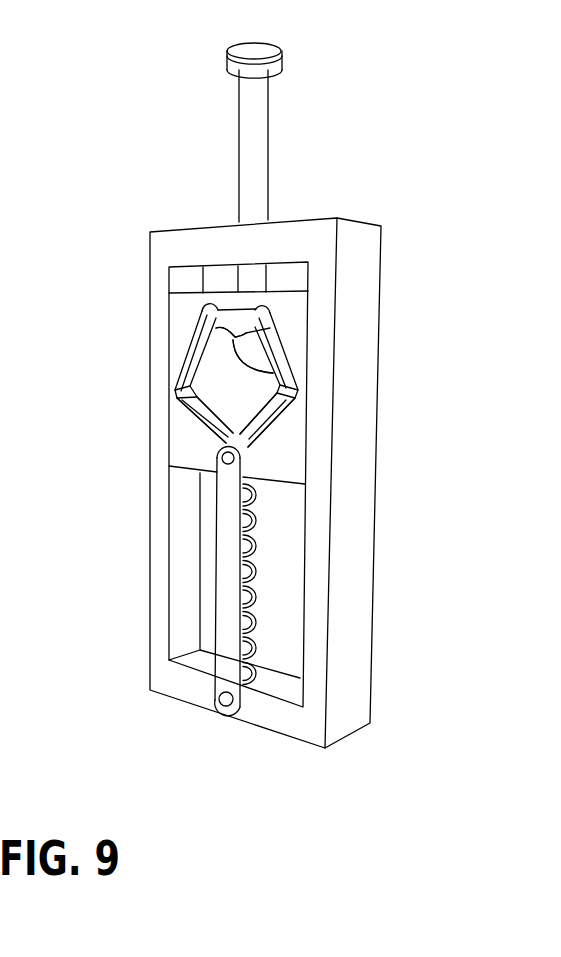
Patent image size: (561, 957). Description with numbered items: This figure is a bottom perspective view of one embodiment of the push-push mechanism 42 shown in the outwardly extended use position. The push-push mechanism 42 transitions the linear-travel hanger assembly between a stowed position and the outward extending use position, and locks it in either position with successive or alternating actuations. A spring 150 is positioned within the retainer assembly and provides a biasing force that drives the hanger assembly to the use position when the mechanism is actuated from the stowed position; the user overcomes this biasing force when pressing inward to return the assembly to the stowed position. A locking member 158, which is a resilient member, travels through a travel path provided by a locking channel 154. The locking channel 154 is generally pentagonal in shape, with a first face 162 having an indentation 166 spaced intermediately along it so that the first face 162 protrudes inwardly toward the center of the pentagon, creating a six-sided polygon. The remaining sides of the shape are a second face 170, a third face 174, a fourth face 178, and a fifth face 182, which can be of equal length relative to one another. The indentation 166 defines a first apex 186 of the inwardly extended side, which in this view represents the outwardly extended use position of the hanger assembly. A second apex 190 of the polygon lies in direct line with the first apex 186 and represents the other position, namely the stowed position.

The push-push mechanism 42 is at (106, 184).
The locking channel 154 is at (203, 322).
The fifth face 182 is at (190, 353).
The fourth face 178 is at (213, 430).
The second face 170 is at (283, 347).
The first face 162 is at (237, 305).
The indentation 166 is at (297, 378).
The first apex 186 is at (374, 361).
The third face 174 is at (282, 432).
The second apex 190 is at (247, 450).
The locking member 158 is at (223, 589).
The spring 150 is at (262, 614).